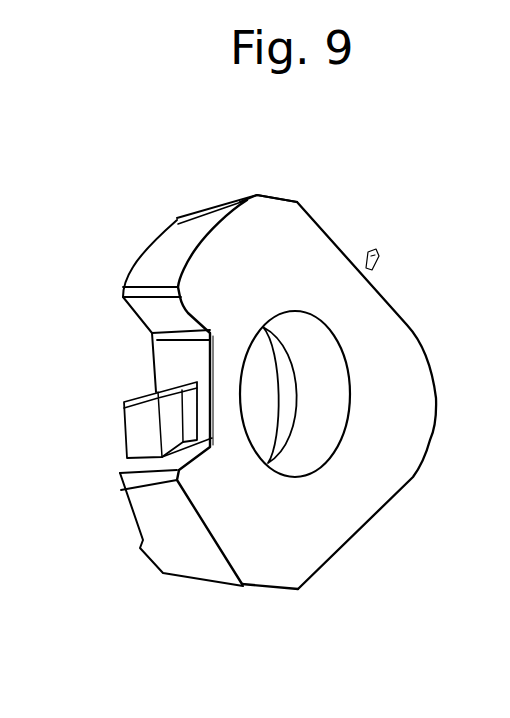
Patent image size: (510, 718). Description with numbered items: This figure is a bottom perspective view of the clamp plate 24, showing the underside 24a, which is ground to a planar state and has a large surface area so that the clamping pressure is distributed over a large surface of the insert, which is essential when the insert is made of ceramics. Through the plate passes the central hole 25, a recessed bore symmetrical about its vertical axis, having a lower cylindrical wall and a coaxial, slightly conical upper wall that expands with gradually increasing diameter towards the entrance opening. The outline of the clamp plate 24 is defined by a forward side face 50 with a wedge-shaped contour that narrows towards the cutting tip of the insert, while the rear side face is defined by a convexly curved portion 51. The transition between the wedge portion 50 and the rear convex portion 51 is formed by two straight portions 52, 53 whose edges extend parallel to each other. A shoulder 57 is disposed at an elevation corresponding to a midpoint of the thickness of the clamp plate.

The forward side face 50 is at (428, 365).
The underside 24a is at (303, 247).
The straight portion 52 is at (272, 198).
The convexly curved portion 51 is at (152, 248).
The straight portion 53 is at (267, 588).
The shoulder 57 is at (165, 420).
The central hole 25 is at (315, 418).
The clamp plate 24 is at (366, 272).